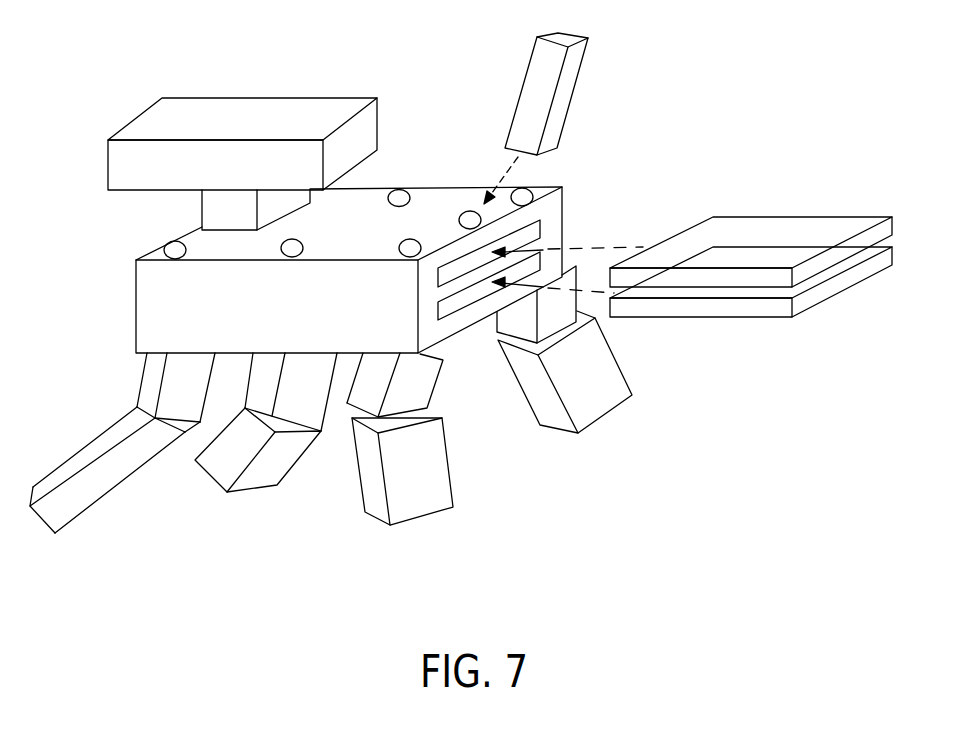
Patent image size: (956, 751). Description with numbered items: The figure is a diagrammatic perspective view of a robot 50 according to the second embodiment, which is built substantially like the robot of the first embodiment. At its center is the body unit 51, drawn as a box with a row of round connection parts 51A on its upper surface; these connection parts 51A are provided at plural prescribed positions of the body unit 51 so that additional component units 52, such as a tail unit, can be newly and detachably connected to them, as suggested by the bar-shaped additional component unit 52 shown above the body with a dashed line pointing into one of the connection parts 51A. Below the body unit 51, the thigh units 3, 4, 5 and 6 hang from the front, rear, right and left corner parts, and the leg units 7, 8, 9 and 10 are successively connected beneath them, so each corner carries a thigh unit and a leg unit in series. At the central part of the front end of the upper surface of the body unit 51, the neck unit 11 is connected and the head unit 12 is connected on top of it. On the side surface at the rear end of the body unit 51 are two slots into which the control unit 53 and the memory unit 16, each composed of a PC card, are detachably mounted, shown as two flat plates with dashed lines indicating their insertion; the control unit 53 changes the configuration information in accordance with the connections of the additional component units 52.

The thigh unit 3 is at (148, 383).
The thigh unit 4 is at (258, 380).
The thigh unit 5 is at (420, 402).
The thigh unit 6 is at (580, 270).
The leg unit 7 is at (73, 466).
The leg unit 8 is at (225, 473).
The leg unit 9 is at (438, 485).
The leg unit 10 is at (593, 407).
The neck unit 11 is at (208, 212).
The head unit 12 is at (275, 107).
The memory unit 16 is at (675, 310).
The robot 50 is at (575, 488).
The body unit 51 is at (432, 192).
The connection parts 51A is at (495, 222).
The additional component unit 52 is at (587, 77).
The control unit 53 is at (708, 228).